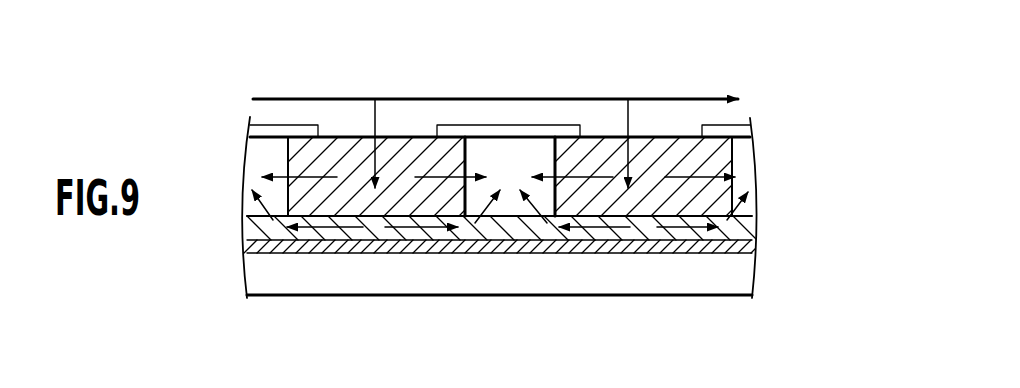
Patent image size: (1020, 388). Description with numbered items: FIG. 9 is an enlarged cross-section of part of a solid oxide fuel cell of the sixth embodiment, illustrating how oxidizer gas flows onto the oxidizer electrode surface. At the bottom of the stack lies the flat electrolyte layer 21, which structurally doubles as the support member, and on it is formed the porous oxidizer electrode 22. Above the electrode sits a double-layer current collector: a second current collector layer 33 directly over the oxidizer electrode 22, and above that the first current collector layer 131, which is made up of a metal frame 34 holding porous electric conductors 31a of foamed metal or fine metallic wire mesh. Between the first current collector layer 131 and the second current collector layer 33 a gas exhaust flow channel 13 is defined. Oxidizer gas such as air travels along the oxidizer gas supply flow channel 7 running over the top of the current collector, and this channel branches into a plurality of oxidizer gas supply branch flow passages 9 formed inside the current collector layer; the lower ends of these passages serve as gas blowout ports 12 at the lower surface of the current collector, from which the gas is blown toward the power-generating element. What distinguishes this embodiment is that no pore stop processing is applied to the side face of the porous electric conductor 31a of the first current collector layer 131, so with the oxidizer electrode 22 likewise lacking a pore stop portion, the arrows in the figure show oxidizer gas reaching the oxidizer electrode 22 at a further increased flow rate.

The oxidizer gas supply flow channel 7 is at (466, 98).
The oxidizer gas supply branch flow passage 9 is at (376, 132).
The gas blowout port 12 is at (367, 203).
The gas exhaust flow channel 13 is at (508, 170).
The electrolyte layer 21 is at (740, 280).
The oxidizer electrode 22 is at (752, 244).
The porous electric conductor 31a is at (666, 130).
The second current collector layer 33 is at (752, 220).
The metal frame 34 is at (555, 127).
The first current collector layer 131 is at (763, 125).